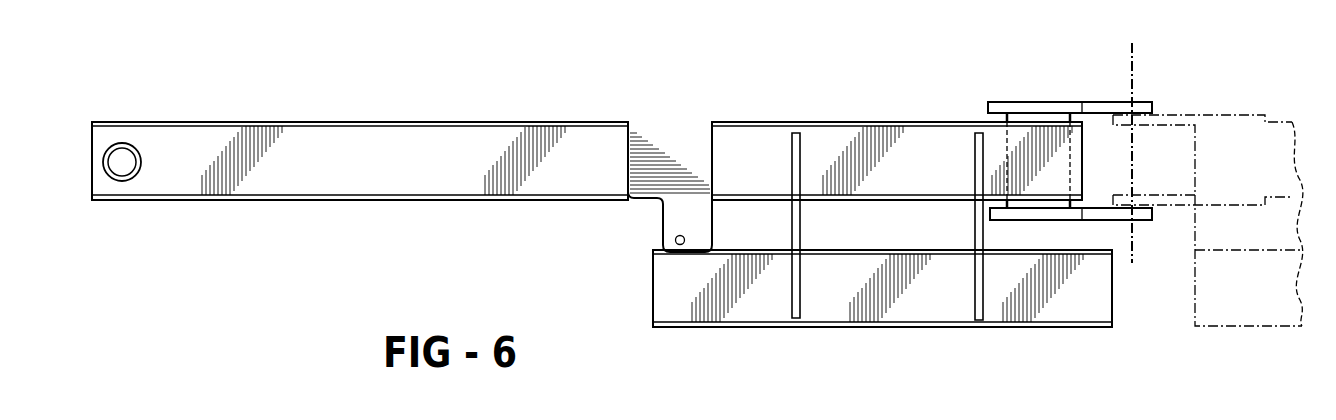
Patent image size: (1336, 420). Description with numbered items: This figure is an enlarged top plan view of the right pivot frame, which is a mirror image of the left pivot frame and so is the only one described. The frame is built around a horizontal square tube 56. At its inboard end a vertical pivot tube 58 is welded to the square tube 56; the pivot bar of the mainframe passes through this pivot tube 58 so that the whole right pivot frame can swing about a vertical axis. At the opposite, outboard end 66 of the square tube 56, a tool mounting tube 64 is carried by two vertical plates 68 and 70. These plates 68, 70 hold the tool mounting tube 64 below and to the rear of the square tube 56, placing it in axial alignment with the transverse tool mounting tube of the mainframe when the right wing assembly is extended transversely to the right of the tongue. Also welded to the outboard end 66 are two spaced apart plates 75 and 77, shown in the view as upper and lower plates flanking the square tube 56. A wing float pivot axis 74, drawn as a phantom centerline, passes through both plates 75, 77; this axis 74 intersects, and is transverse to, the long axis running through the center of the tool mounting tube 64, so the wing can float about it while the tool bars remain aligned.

The horizontal square tube 56 is at (383, 122).
The vertical pivot tube 58 is at (135, 177).
The tool mounting tube 64 is at (735, 327).
The outboard end 66 is at (822, 122).
The vertical plate 68 is at (792, 140).
The vertical plate 70 is at (975, 143).
The wing float pivot axis 74 is at (1135, 258).
The plate 75 is at (1048, 104).
The plate 77 is at (1153, 213).